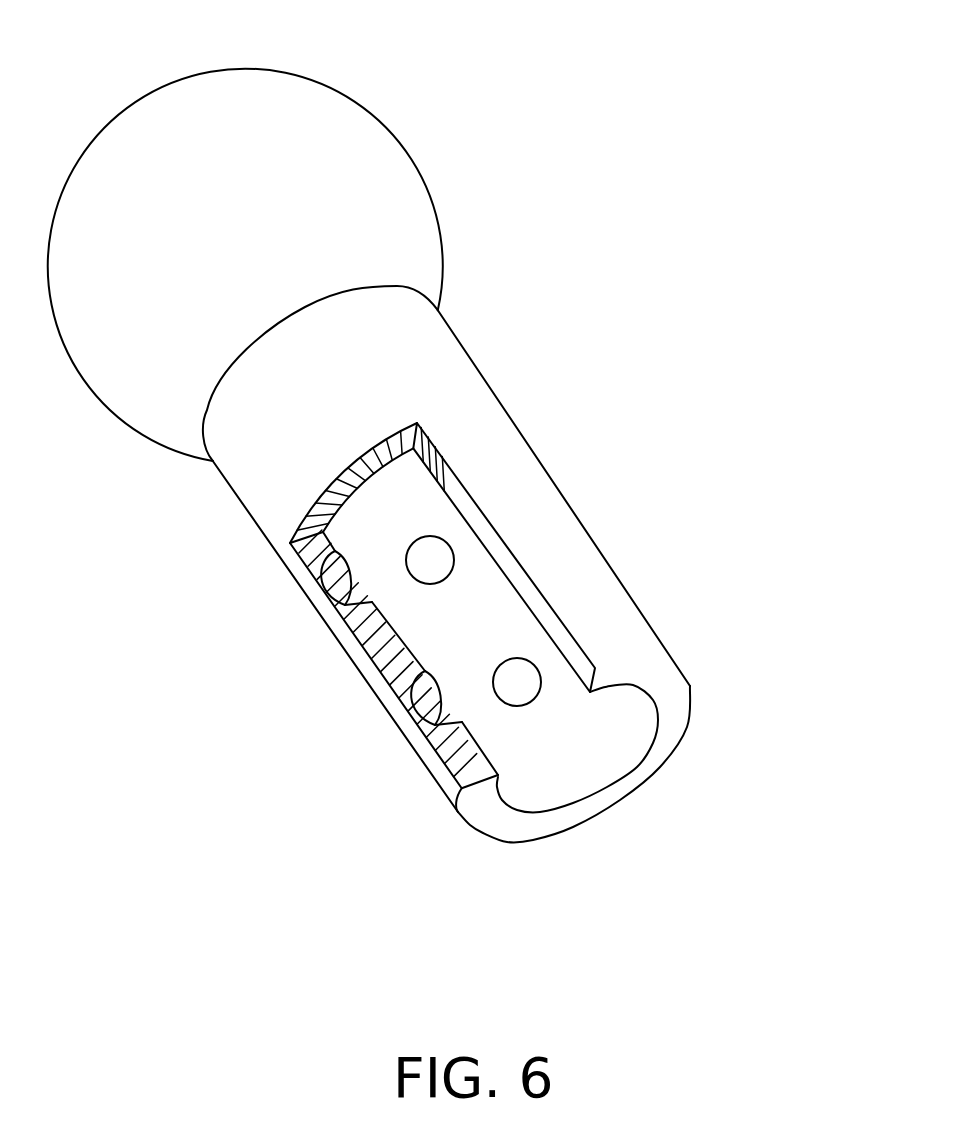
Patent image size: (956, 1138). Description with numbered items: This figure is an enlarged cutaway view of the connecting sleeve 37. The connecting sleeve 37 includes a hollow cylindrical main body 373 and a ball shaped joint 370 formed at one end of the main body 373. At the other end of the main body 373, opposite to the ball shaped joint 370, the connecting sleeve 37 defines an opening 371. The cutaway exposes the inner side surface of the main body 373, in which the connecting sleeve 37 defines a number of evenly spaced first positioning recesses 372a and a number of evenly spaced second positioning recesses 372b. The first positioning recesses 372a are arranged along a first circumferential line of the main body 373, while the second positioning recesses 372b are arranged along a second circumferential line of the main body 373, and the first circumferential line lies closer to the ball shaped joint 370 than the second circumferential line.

The connecting sleeve 37 is at (365, 464).
The ball shaped joint 370 is at (110, 366).
The opening 371 is at (552, 770).
The first positioning recesses 372a is at (340, 588).
The second positioning recesses 372b is at (420, 703).
The main body 373 is at (398, 377).